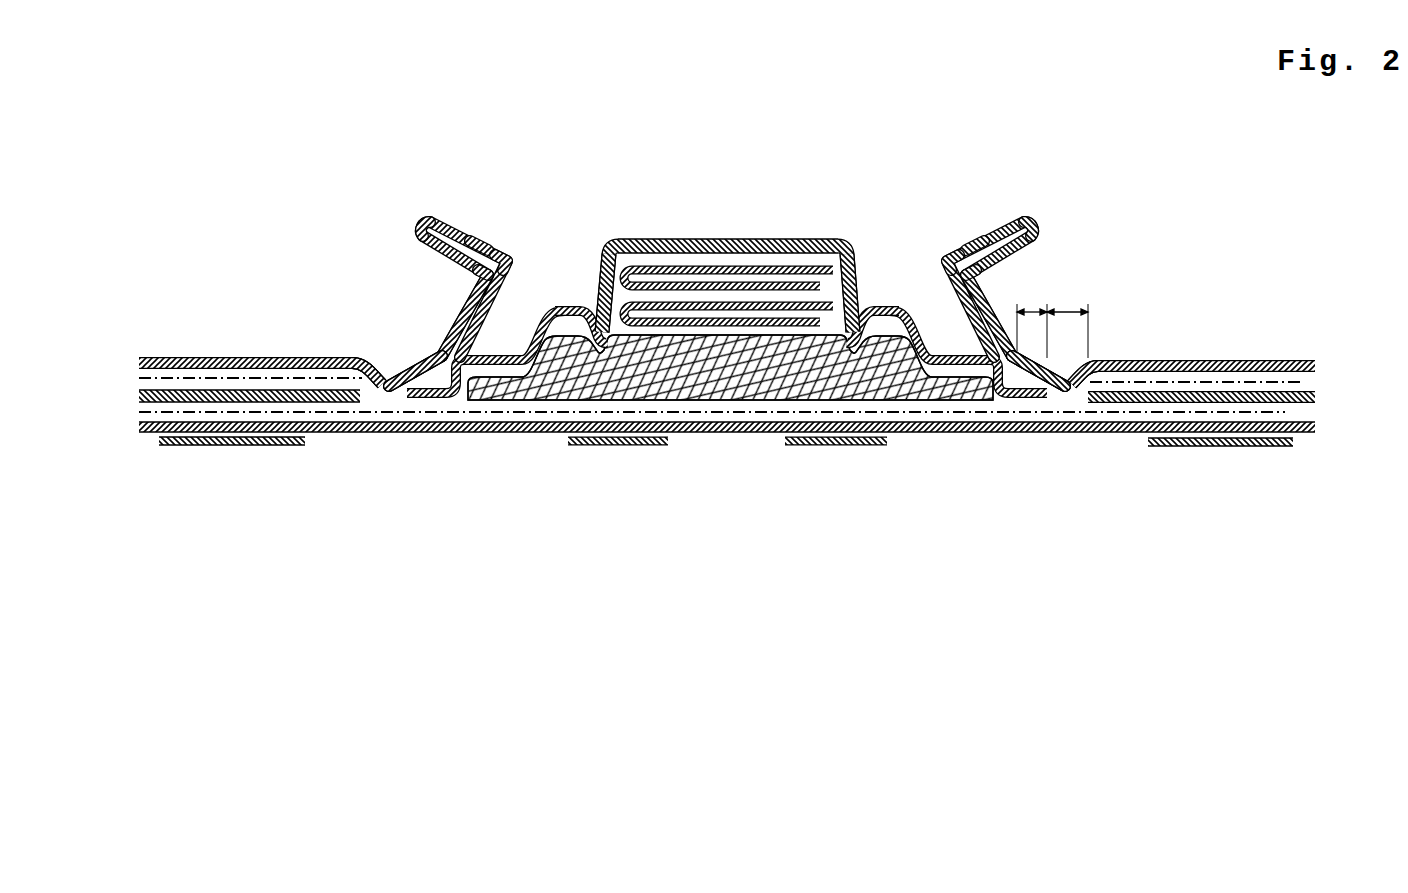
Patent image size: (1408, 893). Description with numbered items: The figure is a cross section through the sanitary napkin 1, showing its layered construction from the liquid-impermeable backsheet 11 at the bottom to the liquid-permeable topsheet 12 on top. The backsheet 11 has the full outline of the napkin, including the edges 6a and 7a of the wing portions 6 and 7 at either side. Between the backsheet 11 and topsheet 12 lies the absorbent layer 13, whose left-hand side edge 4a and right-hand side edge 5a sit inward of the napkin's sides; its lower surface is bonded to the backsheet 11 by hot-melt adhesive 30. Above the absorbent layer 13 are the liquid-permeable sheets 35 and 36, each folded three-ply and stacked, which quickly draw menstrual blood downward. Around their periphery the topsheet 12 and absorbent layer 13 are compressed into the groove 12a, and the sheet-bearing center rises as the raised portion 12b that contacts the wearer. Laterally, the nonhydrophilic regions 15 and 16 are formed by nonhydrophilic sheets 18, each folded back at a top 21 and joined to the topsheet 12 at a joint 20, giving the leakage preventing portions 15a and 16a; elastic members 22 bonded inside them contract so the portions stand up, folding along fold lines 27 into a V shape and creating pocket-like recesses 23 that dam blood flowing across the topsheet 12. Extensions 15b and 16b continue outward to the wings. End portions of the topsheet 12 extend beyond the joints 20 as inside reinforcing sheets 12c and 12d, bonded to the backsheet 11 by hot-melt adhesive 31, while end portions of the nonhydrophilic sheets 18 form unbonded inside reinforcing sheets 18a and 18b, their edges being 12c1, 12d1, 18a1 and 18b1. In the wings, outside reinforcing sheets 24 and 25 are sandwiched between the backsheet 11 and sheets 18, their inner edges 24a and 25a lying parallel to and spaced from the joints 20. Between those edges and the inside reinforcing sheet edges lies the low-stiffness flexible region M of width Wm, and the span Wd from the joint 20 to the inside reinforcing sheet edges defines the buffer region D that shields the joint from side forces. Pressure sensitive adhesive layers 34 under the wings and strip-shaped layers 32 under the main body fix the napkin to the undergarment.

The sanitary napkin 1 is at (1150, 182).
The left-hand side edge of the absorbent layer 4a is at (465, 395).
The right-hand side edge of the absorbent layer 5a is at (992, 400).
The wing portion 6 is at (1232, 472).
The edge of the wing portion 6a is at (140, 358).
The wing portion 7 is at (218, 470).
The edge of the wing portion 7a is at (1315, 366).
The liquid-impermeable backsheet 11 is at (1315, 428).
The liquid-permeable topsheet 12 is at (805, 238).
The compressed groove 12a is at (594, 318).
The raised portion 12b is at (660, 238).
The inside reinforcing sheet 12c is at (1030, 400).
The edge of the inside reinforcing sheet 12c1 is at (1052, 395).
The inside reinforcing sheet 12d is at (418, 399).
The edge of the inside reinforcing sheet 12d1 is at (393, 398).
The absorbent layer 13 is at (748, 400).
The nonhydrophilic region 15 is at (1193, 300).
The leakage preventing portion 15a is at (1003, 286).
The extension 15b is at (1272, 352).
The nonhydrophilic region 16 is at (303, 308).
The leakage preventing portion 16a is at (452, 288).
The extension 16b is at (178, 352).
The nonhydrophilic sheet 18 is at (432, 250).
The inside reinforcing sheet 18a is at (1040, 366).
The edge of the inside reinforcing sheet 18a1 is at (1090, 352).
The inside reinforcing sheet 18b is at (397, 366).
The edge of the inside reinforcing sheet 18b1 is at (387, 372).
The joint 20 is at (486, 366).
The top 21 is at (428, 223).
The elastic member 22 is at (440, 225).
The pocket-like recess 23 is at (545, 312).
The outside reinforcing sheet 24 is at (1315, 398).
The inwardly directed edge of the outside reinforcing sheet 24a is at (1110, 403).
The outside reinforcing sheet 25 is at (139, 396).
The inwardly directed edge of the outside reinforcing sheet 25a is at (360, 402).
The fold line 27 is at (506, 268).
The hot-melt adhesive 30 is at (315, 414).
The hot-melt adhesive 31 is at (150, 378).
The pressure sensitive adhesive layer 32 is at (612, 447).
The pressure sensitive adhesive layer 34 is at (272, 447).
The liquid-permeable sheet 35 is at (757, 302).
The liquid-permeable sheet 36 is at (703, 266).
The buffer region D is at (1033, 344).
The flexible region M is at (383, 395).
The dimension of the buffer region Wd is at (1032, 319).
The width of the flexible region Wm is at (1070, 319).